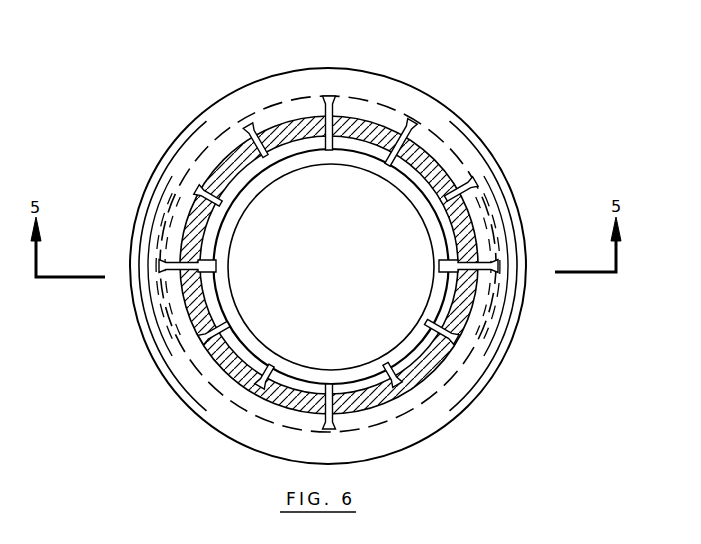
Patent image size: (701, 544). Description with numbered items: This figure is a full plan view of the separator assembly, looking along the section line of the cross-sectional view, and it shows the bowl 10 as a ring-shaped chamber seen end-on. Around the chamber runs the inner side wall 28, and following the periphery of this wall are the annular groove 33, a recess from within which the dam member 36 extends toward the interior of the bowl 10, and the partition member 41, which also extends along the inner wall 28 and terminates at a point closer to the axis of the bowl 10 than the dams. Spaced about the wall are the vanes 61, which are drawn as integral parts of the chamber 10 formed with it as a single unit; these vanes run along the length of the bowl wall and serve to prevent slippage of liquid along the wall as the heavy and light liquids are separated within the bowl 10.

The bowl 10 is at (445, 172).
The inner side wall 28 is at (400, 155).
The annular groove 33 is at (478, 187).
The dam member 36 is at (443, 230).
The partition member 41 is at (442, 256).
The vane 61 is at (325, 140).